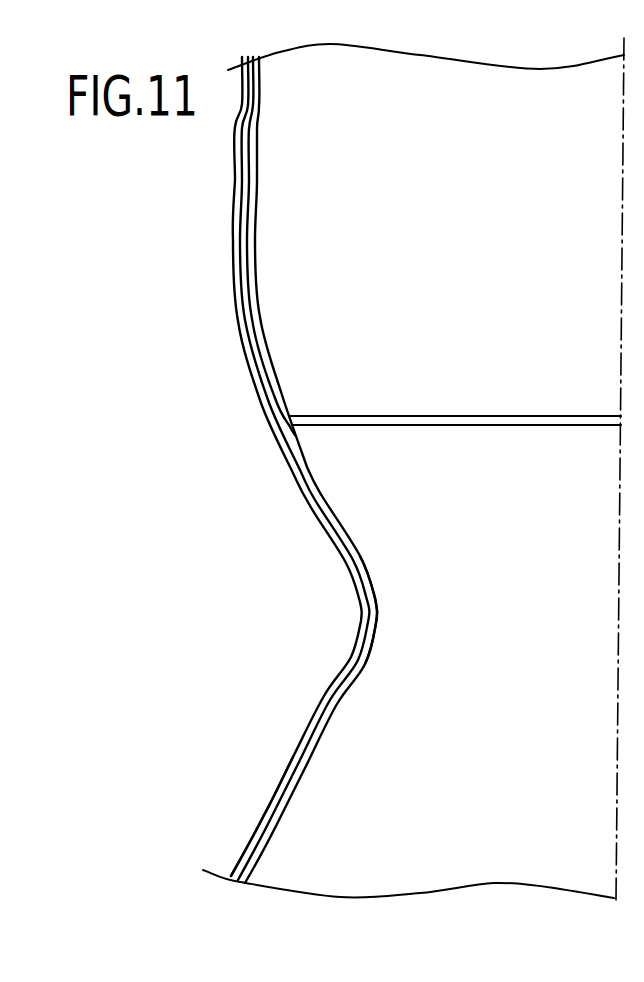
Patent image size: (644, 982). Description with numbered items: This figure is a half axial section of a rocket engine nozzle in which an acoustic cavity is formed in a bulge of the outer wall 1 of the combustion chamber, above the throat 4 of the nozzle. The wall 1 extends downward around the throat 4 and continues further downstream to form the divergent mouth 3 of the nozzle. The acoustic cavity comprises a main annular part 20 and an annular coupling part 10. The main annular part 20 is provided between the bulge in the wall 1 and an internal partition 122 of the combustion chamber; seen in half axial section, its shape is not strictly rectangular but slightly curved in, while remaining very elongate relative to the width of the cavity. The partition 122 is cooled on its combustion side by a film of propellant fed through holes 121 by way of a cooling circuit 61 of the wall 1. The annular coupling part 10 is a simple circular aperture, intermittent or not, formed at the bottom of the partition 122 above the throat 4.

The outer wall 1 is at (235, 168).
The cooling circuit 61 is at (259, 88).
The holes 121 is at (253, 121).
The internal partition 122 is at (258, 273).
The main annular part 20 is at (258, 346).
The annular coupling part 10 is at (437, 415).
The throat 4 is at (377, 622).
The divergent mouth 3 is at (258, 832).